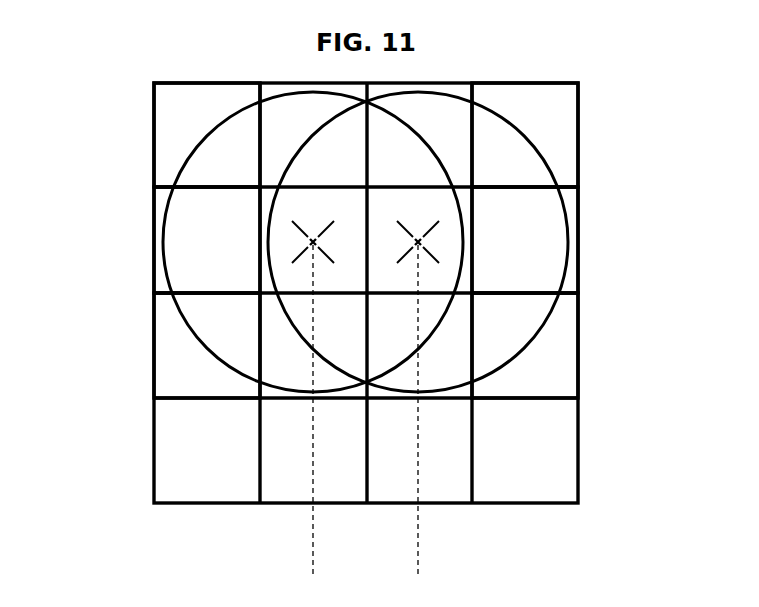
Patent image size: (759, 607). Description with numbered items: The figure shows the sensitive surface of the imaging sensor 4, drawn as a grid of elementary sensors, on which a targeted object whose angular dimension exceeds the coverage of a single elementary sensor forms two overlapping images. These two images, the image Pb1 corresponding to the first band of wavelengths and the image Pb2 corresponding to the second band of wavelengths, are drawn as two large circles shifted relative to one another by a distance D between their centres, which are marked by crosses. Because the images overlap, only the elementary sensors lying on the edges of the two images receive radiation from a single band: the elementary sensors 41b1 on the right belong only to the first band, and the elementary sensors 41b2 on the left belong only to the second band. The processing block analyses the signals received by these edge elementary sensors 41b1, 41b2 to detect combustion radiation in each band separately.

The imaging sensor 4 is at (30, 250).
The elementary sensors belonging to the second band of wavelengths 41b2 is at (154, 135).
The elementary sensors belonging to the first band of wavelengths 41b1 is at (578, 135).
The image corresponding to the second band of wavelengths Pb2 is at (218, 359).
The image corresponding to the first band of wavelengths Pb1 is at (513, 359).
The distance between centers D is at (313, 565).